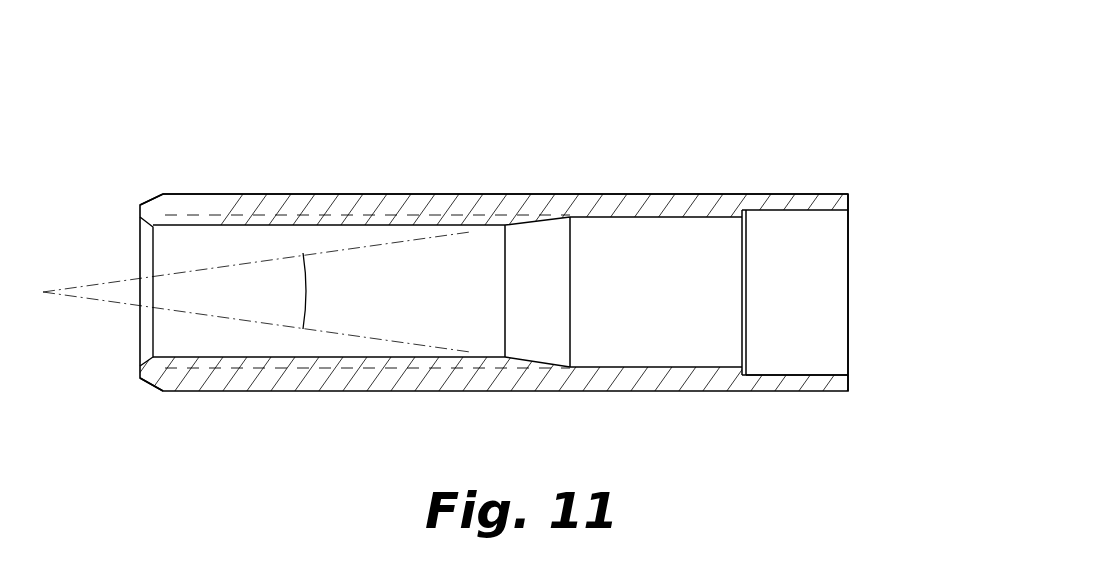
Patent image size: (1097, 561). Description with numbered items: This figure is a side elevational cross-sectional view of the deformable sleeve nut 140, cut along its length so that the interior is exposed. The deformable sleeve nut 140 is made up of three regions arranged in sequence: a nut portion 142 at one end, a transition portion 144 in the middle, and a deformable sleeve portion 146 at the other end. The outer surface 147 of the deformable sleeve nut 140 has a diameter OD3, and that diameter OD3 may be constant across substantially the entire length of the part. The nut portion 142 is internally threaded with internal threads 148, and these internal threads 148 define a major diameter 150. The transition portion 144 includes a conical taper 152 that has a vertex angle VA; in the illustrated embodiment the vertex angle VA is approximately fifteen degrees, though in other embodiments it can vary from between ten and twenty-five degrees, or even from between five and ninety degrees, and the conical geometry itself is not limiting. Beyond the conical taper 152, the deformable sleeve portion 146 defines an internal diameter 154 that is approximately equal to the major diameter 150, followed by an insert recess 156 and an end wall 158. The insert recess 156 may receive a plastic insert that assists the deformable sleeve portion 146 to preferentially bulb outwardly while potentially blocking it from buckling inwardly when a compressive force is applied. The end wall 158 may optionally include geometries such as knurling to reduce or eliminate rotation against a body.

The deformable sleeve nut 140 is at (870, 130).
The nut portion 142 is at (282, 147).
The transition portion 144 is at (540, 152).
The deformable sleeve portion 146 is at (790, 428).
The outer surface 147 is at (447, 194).
The internal threads 148 is at (303, 357).
The major diameter 150 is at (413, 364).
The conical taper 152 is at (537, 357).
The internal diameter 154 is at (662, 367).
The insert recess 156 is at (800, 373).
The end wall 158 is at (850, 378).
The diameter of outer surface OD3 is at (202, 194).
The vertex angle VA is at (310, 297).